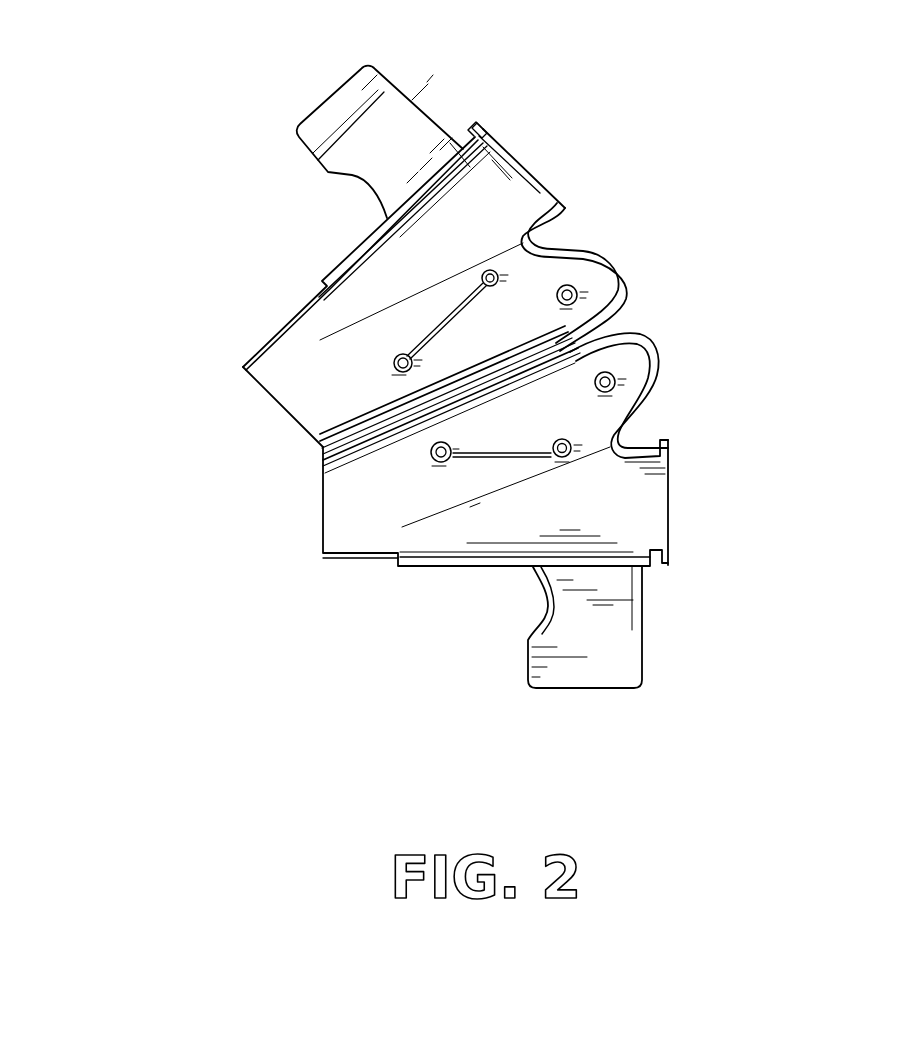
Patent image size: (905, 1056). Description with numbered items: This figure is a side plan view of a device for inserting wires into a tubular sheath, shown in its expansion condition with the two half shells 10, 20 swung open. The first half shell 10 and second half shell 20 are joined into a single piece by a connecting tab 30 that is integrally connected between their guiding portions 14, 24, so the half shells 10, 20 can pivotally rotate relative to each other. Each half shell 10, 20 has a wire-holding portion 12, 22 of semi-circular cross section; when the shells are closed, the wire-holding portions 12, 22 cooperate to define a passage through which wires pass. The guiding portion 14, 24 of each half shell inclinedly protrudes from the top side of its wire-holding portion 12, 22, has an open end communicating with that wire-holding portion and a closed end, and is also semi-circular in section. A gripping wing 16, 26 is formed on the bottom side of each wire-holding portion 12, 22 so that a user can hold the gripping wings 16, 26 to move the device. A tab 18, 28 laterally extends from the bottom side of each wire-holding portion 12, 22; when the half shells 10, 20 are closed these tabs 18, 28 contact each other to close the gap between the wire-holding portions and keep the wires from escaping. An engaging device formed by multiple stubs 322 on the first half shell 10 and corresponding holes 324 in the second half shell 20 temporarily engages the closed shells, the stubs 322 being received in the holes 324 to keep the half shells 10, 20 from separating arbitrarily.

The half shell 10 is at (292, 647).
The wire-holding portion 12 is at (652, 523).
The guiding portion 14 is at (608, 407).
The gripping wing 16 is at (617, 652).
The tab 18 is at (500, 565).
The half shell 20 is at (247, 238).
The wire-holding portion 22 is at (510, 166).
The guiding portion 24 is at (547, 283).
The gripping wing 26 is at (400, 108).
The tab 28 is at (363, 247).
The connecting tab 30 is at (560, 350).
The stubs 322 is at (561, 438).
The holes 324 is at (479, 272).